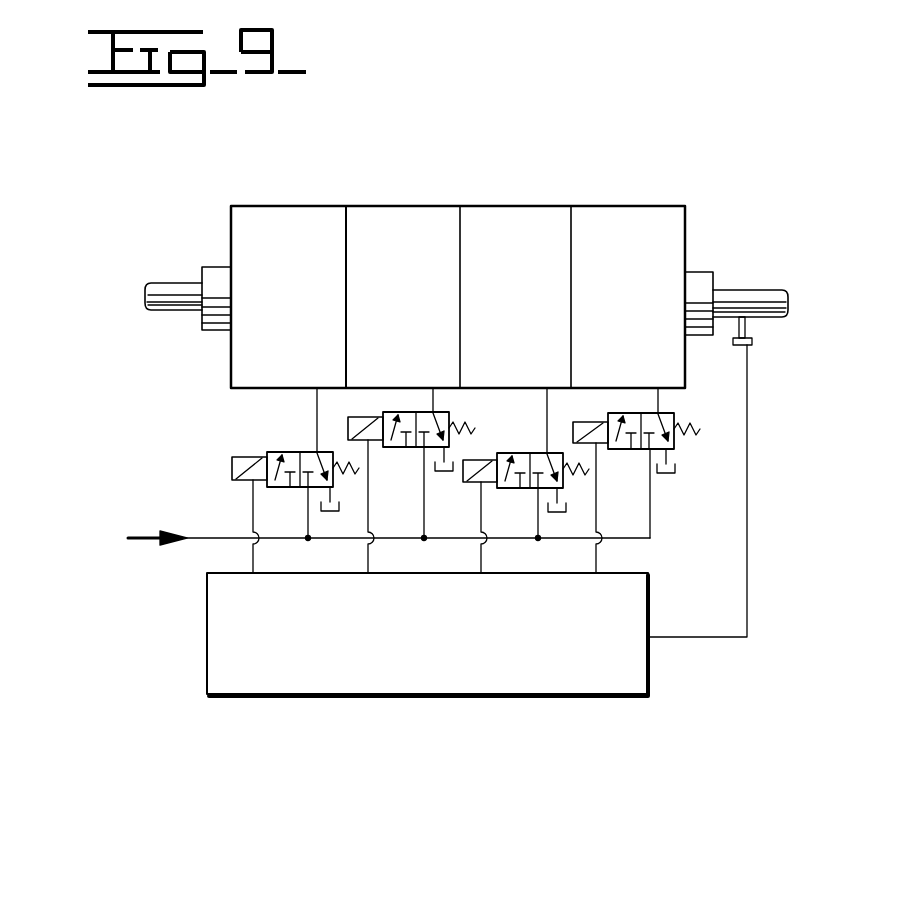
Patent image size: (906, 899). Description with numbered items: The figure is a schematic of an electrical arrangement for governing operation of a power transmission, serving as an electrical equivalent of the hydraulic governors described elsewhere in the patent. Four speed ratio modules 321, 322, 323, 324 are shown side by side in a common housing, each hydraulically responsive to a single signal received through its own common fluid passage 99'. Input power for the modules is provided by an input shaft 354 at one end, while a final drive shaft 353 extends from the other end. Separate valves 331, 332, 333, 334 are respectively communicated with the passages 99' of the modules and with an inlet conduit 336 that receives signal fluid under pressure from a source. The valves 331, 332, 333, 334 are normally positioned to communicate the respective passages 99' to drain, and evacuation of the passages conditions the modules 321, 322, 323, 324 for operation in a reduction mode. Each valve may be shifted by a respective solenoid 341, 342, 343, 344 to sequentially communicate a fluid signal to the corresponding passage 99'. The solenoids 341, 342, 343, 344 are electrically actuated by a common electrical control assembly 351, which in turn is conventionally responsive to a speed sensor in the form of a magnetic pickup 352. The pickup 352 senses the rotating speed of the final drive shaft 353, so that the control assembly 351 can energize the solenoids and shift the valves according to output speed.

The speed ratio module 321 is at (263, 310).
The speed ratio module 322 is at (378, 310).
The speed ratio module 323 is at (489, 310).
The speed ratio module 324 is at (602, 310).
The common fluid passage 99' is at (489, 399).
The valve 331 is at (297, 443).
The valve 332 is at (398, 458).
The valve 333 is at (515, 497).
The valve 334 is at (630, 453).
The inlet conduit 336 is at (215, 540).
The solenoid 341 is at (250, 481).
The solenoid 342 is at (371, 418).
The solenoid 343 is at (470, 462).
The solenoid 344 is at (600, 422).
The electrical control assembly 351 is at (320, 687).
The magnetic pickup 352 is at (752, 328).
The final drive shaft 353 is at (772, 298).
The input shaft 354 is at (173, 290).